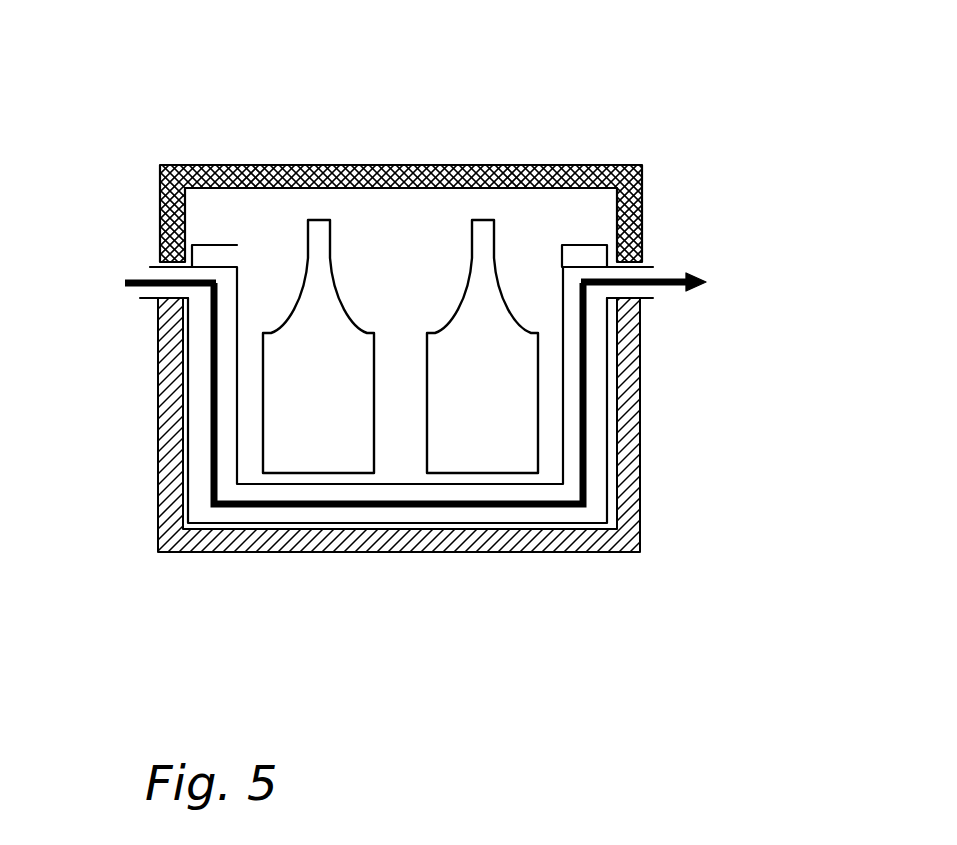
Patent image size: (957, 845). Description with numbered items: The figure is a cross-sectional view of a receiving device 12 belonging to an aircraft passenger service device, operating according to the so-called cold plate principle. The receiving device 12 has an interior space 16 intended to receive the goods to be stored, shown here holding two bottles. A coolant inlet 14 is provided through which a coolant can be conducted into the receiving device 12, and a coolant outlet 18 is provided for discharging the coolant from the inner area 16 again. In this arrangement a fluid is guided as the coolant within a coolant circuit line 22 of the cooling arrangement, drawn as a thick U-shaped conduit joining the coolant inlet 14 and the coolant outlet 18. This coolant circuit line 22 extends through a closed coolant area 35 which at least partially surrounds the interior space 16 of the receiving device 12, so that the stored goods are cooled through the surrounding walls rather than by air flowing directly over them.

The receiving device 12 is at (500, 165).
The coolant inlet 14 is at (162, 262).
The interior space 16 is at (400, 268).
The coolant outlet 18 is at (648, 260).
The coolant circuit line 22 is at (383, 503).
The closed coolant area 35 is at (598, 502).